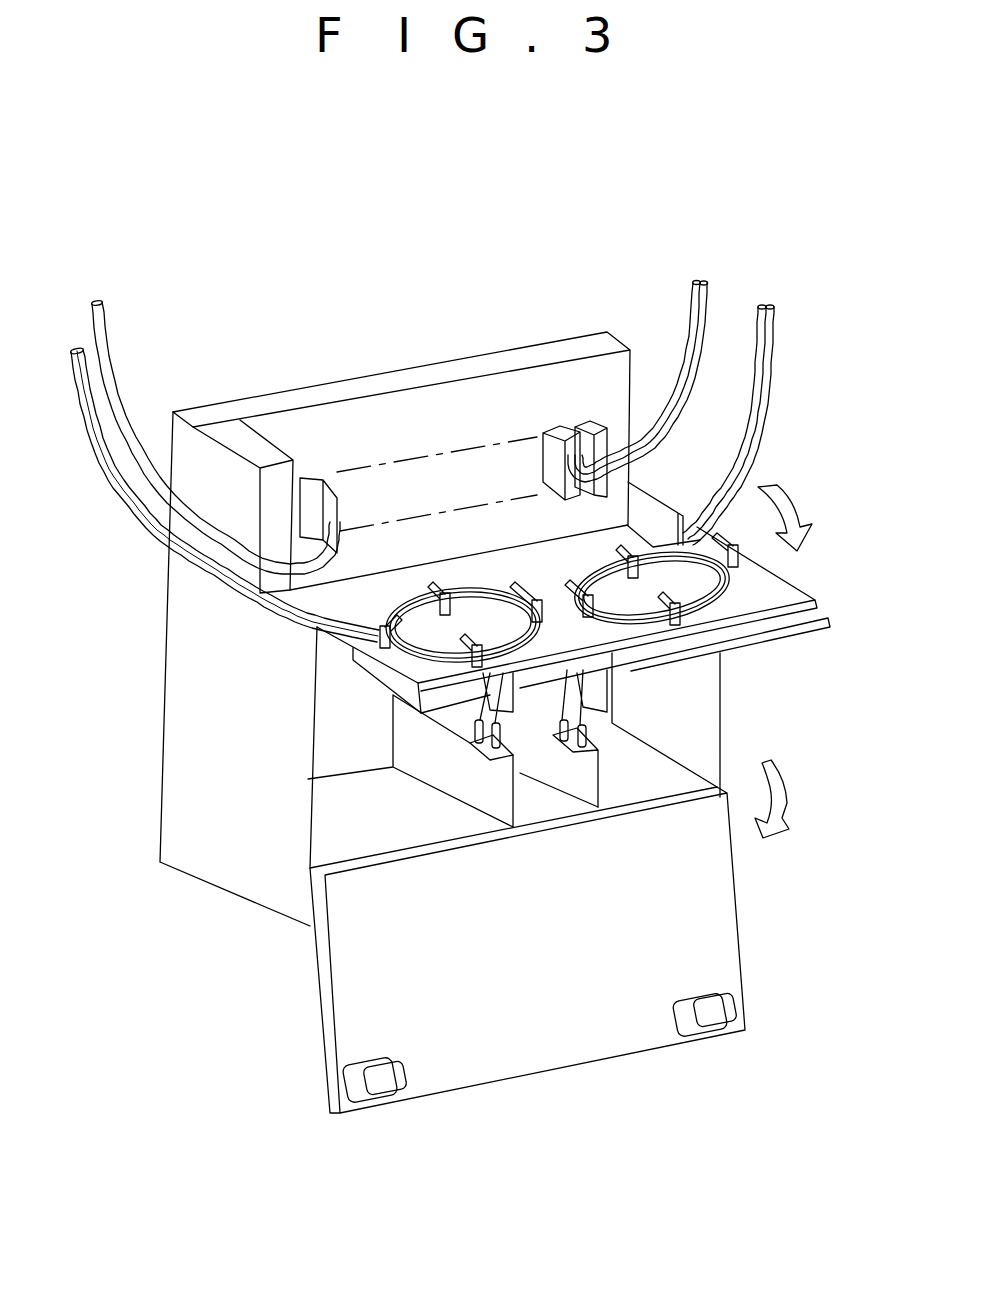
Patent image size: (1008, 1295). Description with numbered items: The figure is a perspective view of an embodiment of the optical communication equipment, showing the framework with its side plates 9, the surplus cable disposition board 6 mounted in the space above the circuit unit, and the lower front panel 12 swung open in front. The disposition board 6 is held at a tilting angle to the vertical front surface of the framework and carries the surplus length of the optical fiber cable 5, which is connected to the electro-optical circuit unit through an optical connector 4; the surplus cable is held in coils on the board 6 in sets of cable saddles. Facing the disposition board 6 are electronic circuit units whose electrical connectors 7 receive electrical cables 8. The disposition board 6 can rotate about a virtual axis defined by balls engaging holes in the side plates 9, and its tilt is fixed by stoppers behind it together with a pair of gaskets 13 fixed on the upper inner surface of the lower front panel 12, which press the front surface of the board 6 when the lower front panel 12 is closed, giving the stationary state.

The optical connector 4 is at (625, 724).
The optical fiber cable 5 is at (770, 378).
The surplus cable disposition board 6 is at (800, 590).
The electrical connectors 7 is at (320, 478).
The electrical cables 8 is at (683, 307).
The side plates 9 is at (182, 663).
The lower front panel 12 is at (743, 933).
The gaskets 13 is at (712, 1037).